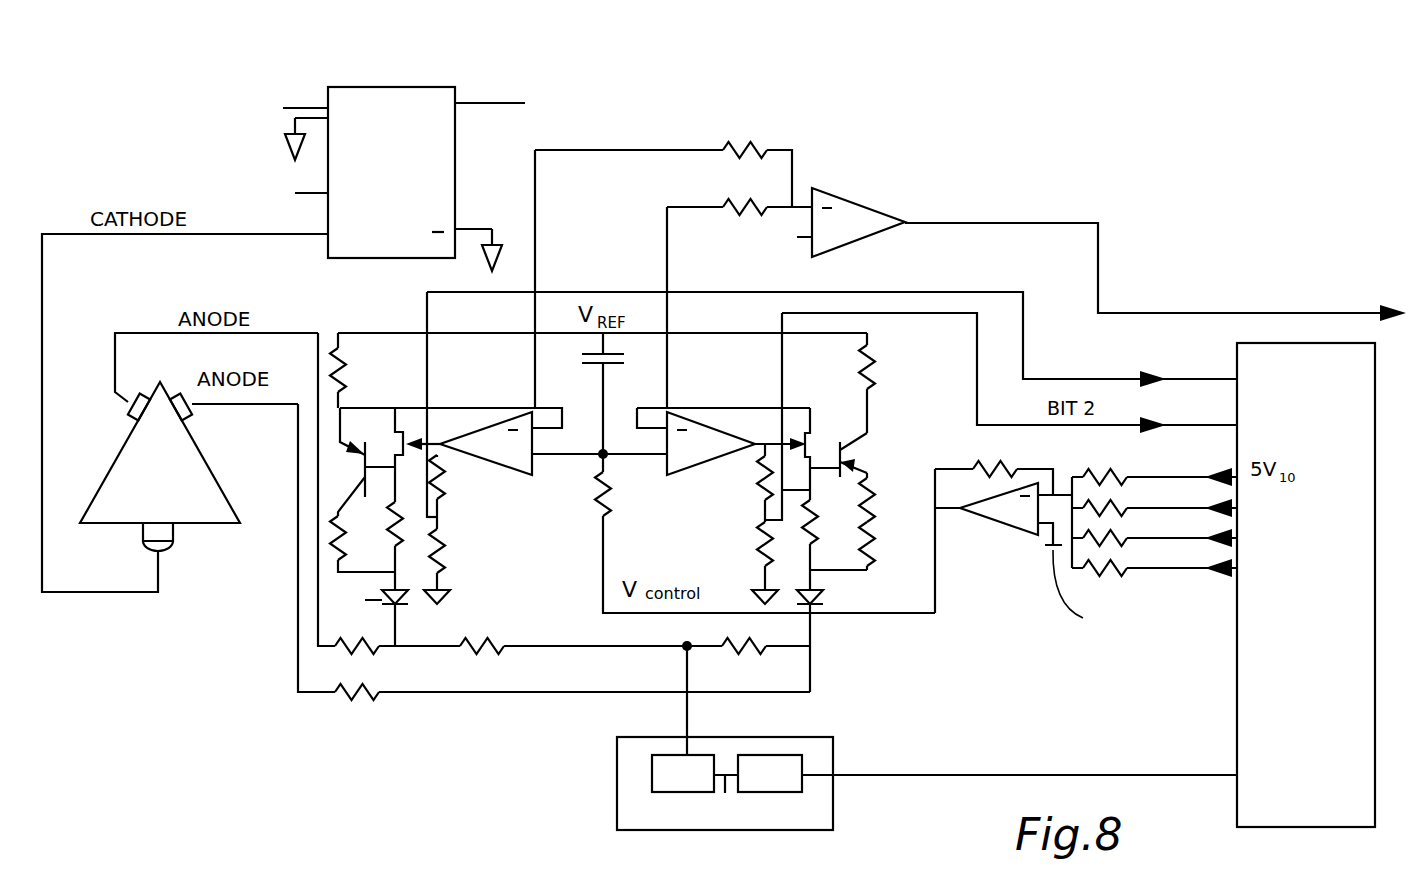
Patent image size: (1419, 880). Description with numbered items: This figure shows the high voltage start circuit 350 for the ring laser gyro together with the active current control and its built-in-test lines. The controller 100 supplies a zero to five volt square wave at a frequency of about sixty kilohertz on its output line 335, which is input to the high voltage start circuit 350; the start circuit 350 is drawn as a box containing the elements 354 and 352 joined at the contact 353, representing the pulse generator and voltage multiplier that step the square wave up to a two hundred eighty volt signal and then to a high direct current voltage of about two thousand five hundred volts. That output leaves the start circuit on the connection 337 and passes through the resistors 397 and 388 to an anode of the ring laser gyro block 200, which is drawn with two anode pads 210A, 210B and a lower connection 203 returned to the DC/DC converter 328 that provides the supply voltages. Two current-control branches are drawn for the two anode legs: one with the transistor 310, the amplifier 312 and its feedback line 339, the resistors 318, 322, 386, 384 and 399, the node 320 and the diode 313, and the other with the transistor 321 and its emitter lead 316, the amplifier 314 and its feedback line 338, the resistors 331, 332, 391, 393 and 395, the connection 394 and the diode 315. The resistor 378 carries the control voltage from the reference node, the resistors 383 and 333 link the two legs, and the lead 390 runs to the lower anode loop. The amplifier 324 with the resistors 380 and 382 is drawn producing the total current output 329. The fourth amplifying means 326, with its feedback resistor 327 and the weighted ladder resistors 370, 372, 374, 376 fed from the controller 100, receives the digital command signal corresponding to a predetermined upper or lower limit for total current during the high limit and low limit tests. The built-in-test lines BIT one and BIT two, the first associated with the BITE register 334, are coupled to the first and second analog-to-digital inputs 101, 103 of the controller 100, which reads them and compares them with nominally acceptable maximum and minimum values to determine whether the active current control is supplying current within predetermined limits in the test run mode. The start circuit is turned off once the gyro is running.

The controller 100 is at (1306, 585).
The first analog-to-digital input 101 is at (1287, 388).
The second analog-to-digital input 103 is at (1287, 432).
The ring laser gyro block 200 is at (160, 452).
The sample strobe 203 is at (146, 547).
The anode 210A is at (193, 417).
The anode 210B is at (128, 418).
The transistor 310 is at (342, 446).
The operational amplifier 312 is at (515, 470).
The diode 313 is at (408, 606).
The operational amplifier 314 is at (683, 470).
The diode 315 is at (826, 597).
The transistor emitter 316 is at (850, 458).
The resistor 318 is at (348, 370).
The connection node 320 is at (440, 500).
The transistor 321 is at (807, 443).
The resistor 322 is at (338, 512).
The operational amplifier 324 is at (862, 192).
The fourth amplifying means 326 is at (985, 518).
The feedback resistor 327 is at (985, 462).
The DC/DC converter 328 is at (430, 100).
The total current output line 329 is at (1068, 223).
The 5K resistor 331 is at (870, 355).
The resistor 332 is at (835, 492).
The resistor 333 is at (780, 666).
The built in test equipment register 334 is at (945, 292).
The controller output line 335 is at (870, 775).
The ellipsis dots 337 is at (690, 710).
The feedback line 338 is at (697, 408).
The feedback line 339 is at (445, 408).
The high voltage start circuit 350 is at (762, 787).
The switch element 352 is at (770, 773).
The switch contact 353 is at (722, 800).
The switch element 354 is at (683, 773).
The ladder resistor 2^3 370 is at (1192, 478).
The ladder resistor 2^2 372 is at (1192, 509).
The ladder resistor 2^1 374 is at (1192, 539).
The ladder resistor 2^0 376 is at (1192, 569).
The resistor 378 is at (600, 503).
The resistor 380 is at (745, 140).
The resistor 382 is at (742, 202).
The resistor 383 is at (490, 645).
The resistor 384 is at (443, 542).
The resistor 386 is at (443, 470).
The resistor 388 is at (357, 698).
The collector lead 390 is at (335, 545).
The resistor 391 is at (758, 480).
The resistor 393 is at (757, 558).
The connection line 394 is at (818, 568).
The capacitor / resistor 395 is at (630, 360).
The resistor 397 is at (345, 653).
The resistor 399 is at (402, 528).